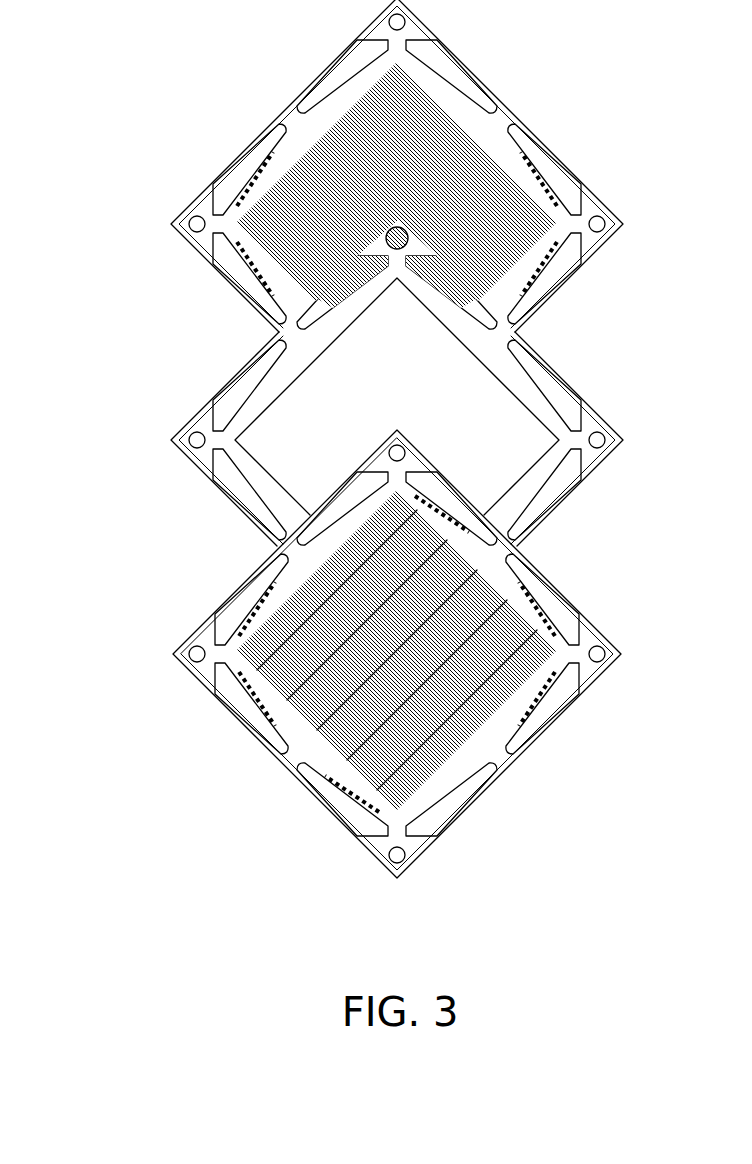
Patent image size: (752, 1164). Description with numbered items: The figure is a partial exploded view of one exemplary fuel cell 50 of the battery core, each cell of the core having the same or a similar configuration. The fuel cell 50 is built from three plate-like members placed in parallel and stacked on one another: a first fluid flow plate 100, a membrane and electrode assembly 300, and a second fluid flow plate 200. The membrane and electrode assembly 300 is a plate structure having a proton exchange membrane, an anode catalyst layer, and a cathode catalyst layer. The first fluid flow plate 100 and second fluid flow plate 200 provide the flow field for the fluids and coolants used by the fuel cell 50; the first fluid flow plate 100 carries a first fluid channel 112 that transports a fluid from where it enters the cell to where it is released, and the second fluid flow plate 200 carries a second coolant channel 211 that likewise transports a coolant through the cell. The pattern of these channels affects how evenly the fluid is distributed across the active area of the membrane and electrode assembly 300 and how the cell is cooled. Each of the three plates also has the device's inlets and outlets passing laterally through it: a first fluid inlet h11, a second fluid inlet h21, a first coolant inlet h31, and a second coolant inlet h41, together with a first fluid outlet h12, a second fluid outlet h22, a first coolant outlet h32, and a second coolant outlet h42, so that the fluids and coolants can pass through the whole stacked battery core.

The fuel cell 50 is at (98, 186).
The first fluid flow plate 100 is at (359, 166).
The second fluid flow plate 200 is at (361, 654).
The membrane and electrode assembly 300 is at (173, 440).
The first fluid channel 112 is at (397, 185).
The second coolant channel 211 is at (397, 650).
The first fluid inlet h11 is at (355, 42).
The second fluid inlet h21 is at (440, 42).
The first coolant inlet h31 is at (568, 274).
The second coolant inlet h41 is at (228, 274).
The first fluid outlet h12 is at (443, 836).
The second fluid outlet h22 is at (352, 836).
The first coolant outlet h32 is at (222, 178).
The second coolant outlet h42 is at (572, 178).